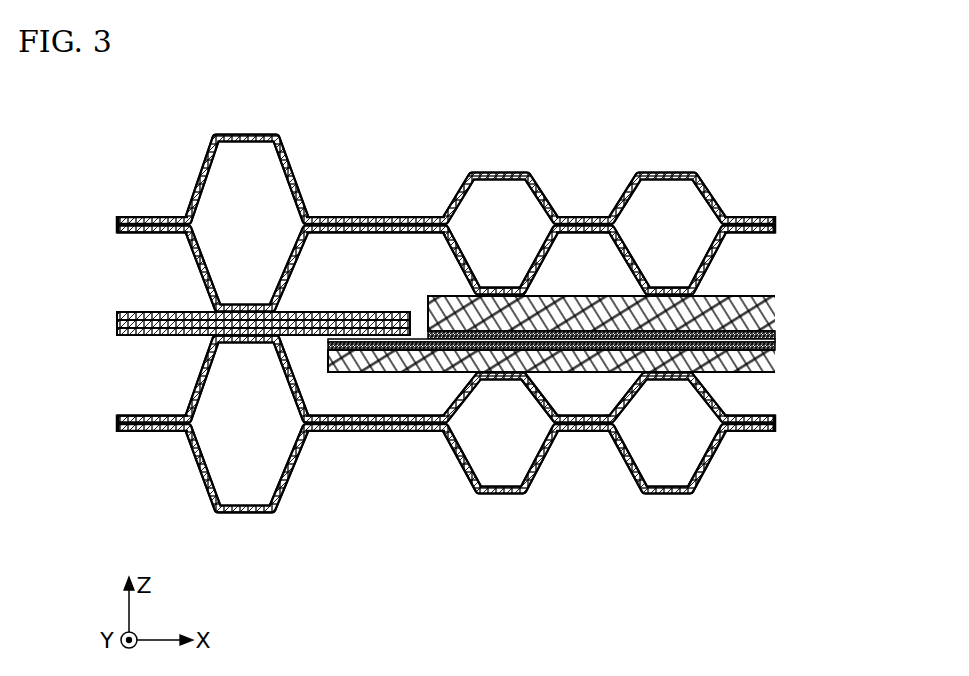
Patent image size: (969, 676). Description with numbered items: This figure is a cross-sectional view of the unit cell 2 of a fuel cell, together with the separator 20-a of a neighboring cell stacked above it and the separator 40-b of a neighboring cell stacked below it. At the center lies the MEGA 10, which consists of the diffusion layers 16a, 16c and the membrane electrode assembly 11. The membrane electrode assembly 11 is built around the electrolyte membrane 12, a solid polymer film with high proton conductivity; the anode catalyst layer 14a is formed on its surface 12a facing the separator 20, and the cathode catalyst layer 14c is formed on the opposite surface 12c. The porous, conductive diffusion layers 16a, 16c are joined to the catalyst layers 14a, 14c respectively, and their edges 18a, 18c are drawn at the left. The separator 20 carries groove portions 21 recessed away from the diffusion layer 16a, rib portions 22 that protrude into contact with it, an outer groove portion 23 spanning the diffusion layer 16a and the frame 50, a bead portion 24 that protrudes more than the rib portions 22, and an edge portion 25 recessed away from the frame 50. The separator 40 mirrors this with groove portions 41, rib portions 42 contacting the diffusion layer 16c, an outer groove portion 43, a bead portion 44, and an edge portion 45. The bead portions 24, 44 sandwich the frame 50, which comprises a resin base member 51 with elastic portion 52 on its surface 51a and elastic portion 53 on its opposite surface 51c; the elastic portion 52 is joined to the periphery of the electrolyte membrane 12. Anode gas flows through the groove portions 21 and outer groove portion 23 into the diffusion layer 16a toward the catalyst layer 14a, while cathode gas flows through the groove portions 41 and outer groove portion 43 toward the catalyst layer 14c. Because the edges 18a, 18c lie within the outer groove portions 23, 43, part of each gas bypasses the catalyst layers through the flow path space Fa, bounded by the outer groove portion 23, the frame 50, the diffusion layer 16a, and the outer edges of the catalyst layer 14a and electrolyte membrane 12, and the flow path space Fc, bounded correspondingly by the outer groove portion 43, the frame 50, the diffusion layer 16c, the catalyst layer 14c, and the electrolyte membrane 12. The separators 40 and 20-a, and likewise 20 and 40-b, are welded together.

The unit cell 2 is at (475, 341).
The MEGA 10 is at (610, 334).
The membrane electrode assembly 11 is at (603, 331).
The electrolyte membrane 12 is at (777, 340).
The surface 12c is at (443, 300).
The surface 12a is at (433, 368).
The cathode catalyst layer 14c is at (777, 334).
The anode catalyst layer 14a is at (585, 355).
The diffusion layer 16c is at (619, 297).
The diffusion layer 16a is at (587, 377).
The edge 18c is at (427, 298).
The edge 18a is at (327, 365).
The separator 20 is at (775, 419).
The separator 20-a is at (775, 218).
The groove portion 21 is at (590, 219).
The rib portion 22 is at (503, 176).
The outer groove portion 23 is at (393, 219).
The bead portion 24 is at (243, 143).
The edge portion 25 is at (137, 216).
The separator 40 is at (775, 232).
The separator 40-b is at (775, 431).
The groove portion 41 is at (583, 233).
The rib portion 42 is at (497, 290).
The outer groove portion 43 is at (373, 233).
The bead portion 44 is at (243, 305).
The edge portion 45 is at (137, 234).
The frame 50 is at (224, 323).
The base member 51 is at (121, 324).
The surface 51a is at (163, 336).
The surface 51c is at (352, 311).
The elastic portion 52 is at (126, 332).
The elastic portion 53 is at (126, 314).
The flow path space Fc is at (335, 253).
The flow path space Fa is at (358, 392).